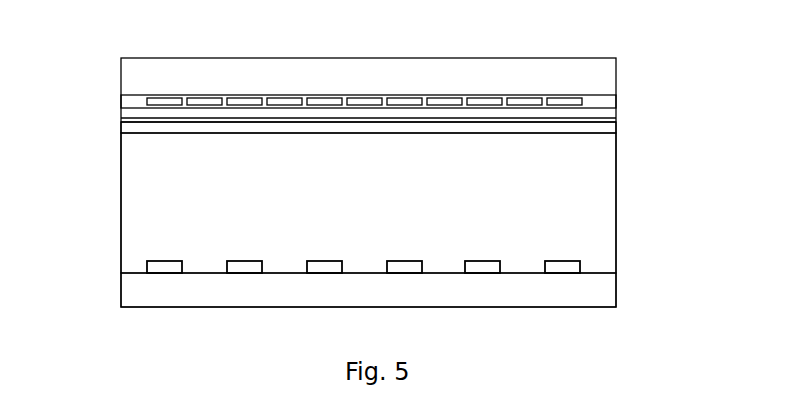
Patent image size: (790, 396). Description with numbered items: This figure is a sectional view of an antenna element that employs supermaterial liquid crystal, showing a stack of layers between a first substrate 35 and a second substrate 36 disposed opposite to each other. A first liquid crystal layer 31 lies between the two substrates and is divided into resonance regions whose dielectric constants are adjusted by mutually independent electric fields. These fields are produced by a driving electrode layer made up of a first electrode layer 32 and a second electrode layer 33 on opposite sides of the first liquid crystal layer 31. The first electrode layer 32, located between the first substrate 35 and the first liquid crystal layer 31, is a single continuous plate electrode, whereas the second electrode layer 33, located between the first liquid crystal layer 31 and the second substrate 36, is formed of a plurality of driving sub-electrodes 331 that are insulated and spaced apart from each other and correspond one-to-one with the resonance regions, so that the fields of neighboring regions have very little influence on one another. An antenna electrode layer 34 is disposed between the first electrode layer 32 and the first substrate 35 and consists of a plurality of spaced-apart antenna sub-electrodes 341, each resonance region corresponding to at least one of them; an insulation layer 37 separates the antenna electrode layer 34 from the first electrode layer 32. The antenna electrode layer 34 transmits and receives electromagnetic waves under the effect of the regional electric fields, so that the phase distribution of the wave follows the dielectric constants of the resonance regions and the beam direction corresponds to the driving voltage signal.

The first liquid crystal layer 31 is at (593, 189).
The first electrode layer 32 is at (600, 128).
The second electrode layer 33 is at (590, 268).
The driving sub-electrodes 331 is at (147, 268).
The antenna electrode layer 34 is at (590, 102).
The antenna sub-electrodes 341 is at (168, 105).
The first substrate 35 is at (617, 72).
The second substrate 36 is at (593, 290).
The insulation layer 37 is at (605, 117).